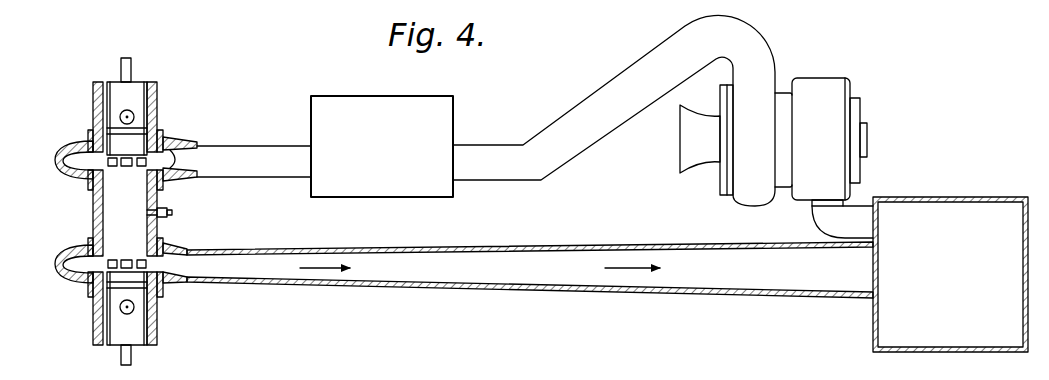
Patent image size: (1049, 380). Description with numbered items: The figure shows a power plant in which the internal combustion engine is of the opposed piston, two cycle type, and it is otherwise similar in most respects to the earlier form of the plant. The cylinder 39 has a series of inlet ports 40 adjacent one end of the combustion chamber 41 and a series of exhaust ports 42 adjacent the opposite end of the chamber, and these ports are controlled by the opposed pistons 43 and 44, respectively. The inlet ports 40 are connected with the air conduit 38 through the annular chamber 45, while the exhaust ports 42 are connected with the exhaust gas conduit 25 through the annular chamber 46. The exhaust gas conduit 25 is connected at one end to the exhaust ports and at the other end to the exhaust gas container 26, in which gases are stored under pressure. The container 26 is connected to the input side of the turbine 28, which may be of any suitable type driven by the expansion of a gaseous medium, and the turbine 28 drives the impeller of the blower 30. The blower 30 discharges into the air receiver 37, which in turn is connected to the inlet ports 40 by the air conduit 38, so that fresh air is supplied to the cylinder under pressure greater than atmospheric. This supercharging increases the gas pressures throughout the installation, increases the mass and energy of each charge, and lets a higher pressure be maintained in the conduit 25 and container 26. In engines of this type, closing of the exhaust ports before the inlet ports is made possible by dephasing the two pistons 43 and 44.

The exhaust gas conduit 25 is at (330, 251).
The exhaust gas container 26 is at (892, 332).
The turbine 28 is at (843, 121).
The blower 30 is at (752, 160).
The air receiver 37 is at (448, 121).
The air conduit 38 is at (250, 152).
The cylinder 39 is at (93, 210).
The inlet ports 40 is at (168, 142).
The combustion chamber 41 is at (138, 201).
The exhaust ports 42 is at (97, 267).
The piston 43 is at (138, 104).
The piston 44 is at (133, 329).
The annular chamber 45 is at (70, 160).
The annular chamber 46 is at (70, 262).